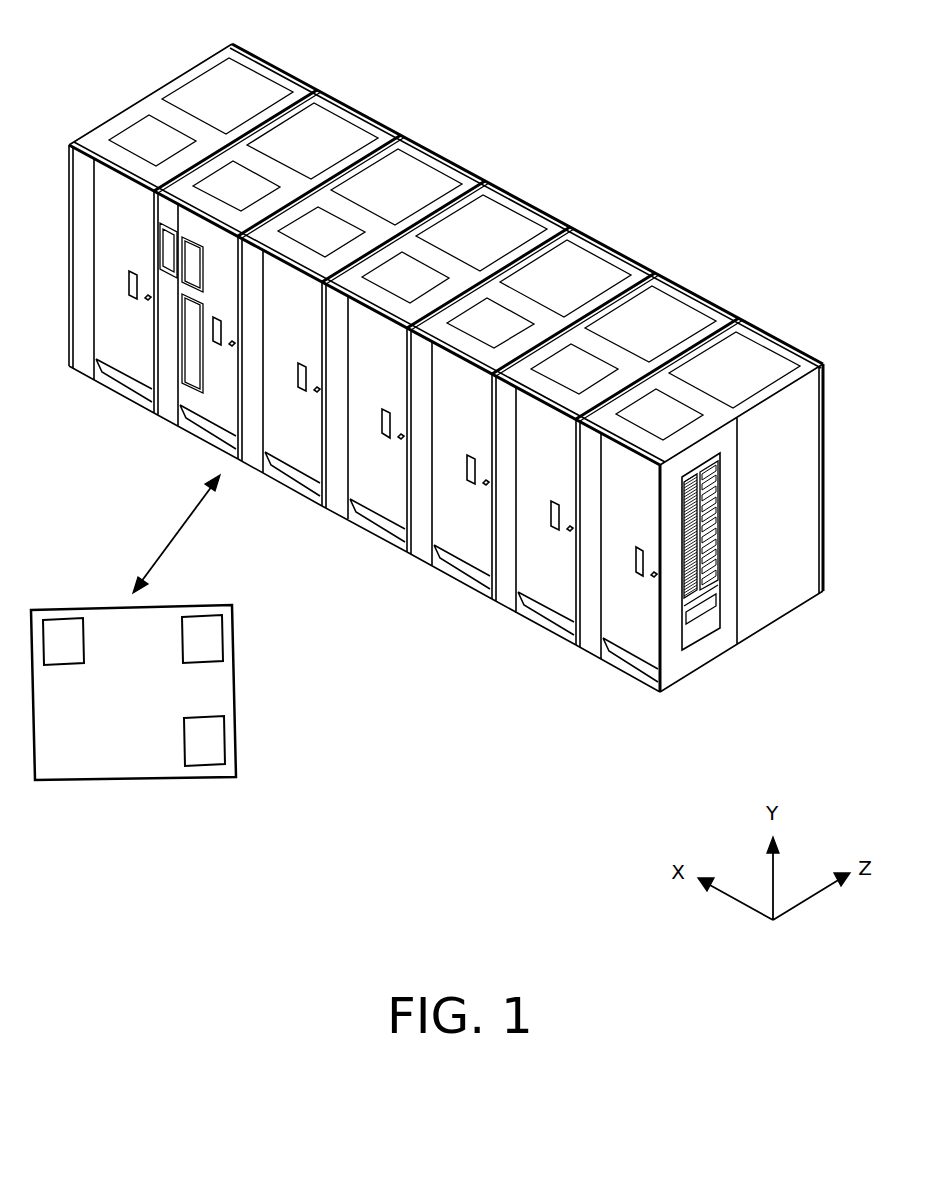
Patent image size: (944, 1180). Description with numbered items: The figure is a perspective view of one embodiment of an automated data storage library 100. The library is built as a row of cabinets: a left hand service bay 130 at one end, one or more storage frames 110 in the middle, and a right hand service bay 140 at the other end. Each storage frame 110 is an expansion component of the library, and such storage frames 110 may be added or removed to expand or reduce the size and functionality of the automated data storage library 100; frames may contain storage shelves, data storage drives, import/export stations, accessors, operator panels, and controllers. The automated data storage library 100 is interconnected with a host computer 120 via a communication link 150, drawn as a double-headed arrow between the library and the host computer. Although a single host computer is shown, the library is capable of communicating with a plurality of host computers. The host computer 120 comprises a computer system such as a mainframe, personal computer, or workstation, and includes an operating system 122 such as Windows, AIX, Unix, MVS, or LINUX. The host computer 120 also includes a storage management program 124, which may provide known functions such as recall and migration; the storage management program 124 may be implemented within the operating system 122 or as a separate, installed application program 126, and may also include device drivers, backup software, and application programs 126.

The automated data storage library 100 is at (446, 362).
The storage frame 110 is at (366, 112).
The host computer 120 is at (170, 724).
The operating system 122 is at (63, 667).
The storage management program 124 is at (225, 637).
The application program 126 is at (225, 737).
The left hand service bay 130 is at (281, 64).
The right hand service bay 140 is at (779, 337).
The communication link 150 is at (177, 528).